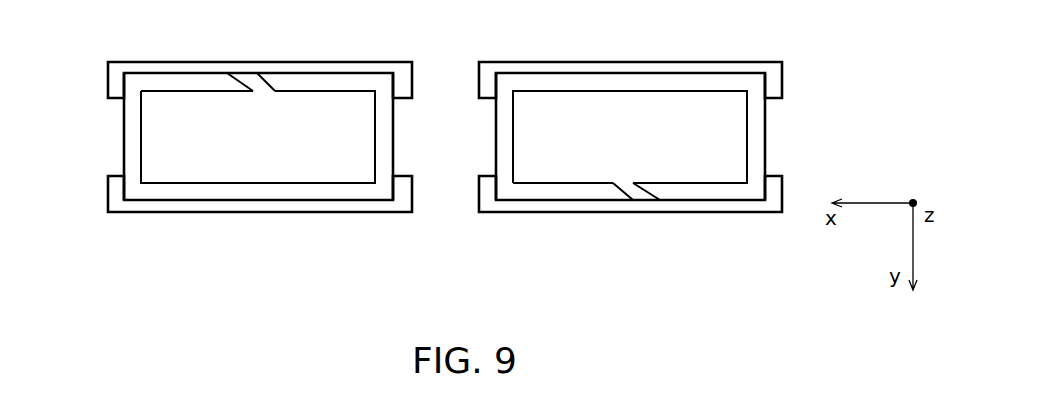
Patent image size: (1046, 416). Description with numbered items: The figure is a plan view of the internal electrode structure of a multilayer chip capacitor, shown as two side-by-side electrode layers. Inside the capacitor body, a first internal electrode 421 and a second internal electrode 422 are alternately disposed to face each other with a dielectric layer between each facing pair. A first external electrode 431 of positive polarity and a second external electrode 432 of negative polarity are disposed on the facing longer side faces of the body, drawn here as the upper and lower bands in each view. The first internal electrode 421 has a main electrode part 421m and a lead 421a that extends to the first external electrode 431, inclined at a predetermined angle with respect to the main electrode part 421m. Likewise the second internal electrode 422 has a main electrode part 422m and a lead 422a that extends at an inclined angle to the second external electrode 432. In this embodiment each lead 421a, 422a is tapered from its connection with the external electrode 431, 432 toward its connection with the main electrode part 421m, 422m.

The first internal electrode 421 is at (172, 146).
The lead 421a is at (263, 82).
The main electrode part 421m is at (172, 103).
The second internal electrode 422 is at (716, 147).
The lead 422a is at (623, 200).
The main electrode part 422m is at (698, 167).
The first external electrode 431 is at (323, 67).
The second external electrode 432 is at (242, 205).